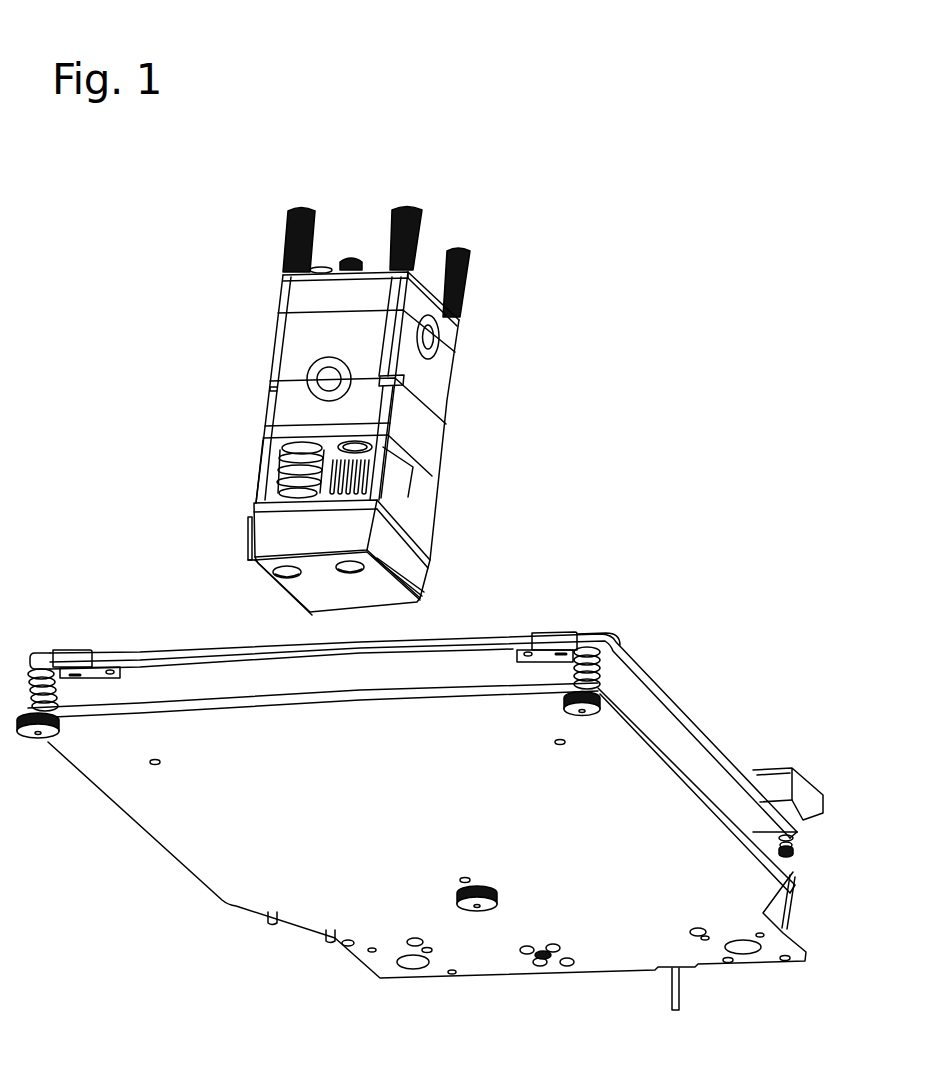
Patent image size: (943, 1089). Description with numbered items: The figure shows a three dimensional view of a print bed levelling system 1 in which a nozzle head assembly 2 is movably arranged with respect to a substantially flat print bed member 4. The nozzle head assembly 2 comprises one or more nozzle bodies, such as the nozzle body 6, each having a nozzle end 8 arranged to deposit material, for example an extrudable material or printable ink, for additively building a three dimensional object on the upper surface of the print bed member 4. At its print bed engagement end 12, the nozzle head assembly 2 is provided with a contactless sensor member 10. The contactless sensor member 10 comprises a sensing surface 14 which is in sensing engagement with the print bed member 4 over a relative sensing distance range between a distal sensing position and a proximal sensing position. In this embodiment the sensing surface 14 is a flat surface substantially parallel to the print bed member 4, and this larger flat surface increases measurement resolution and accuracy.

The print bed levelling system 1 is at (522, 303).
The nozzle head assembly 2 is at (440, 387).
The print bed member 4 is at (160, 656).
The nozzle body 6 is at (288, 477).
The nozzle end 8 is at (287, 573).
The contactless sensor member 10 is at (372, 597).
The print bed engagement end 12 is at (272, 537).
The sensing surface 14 is at (323, 600).